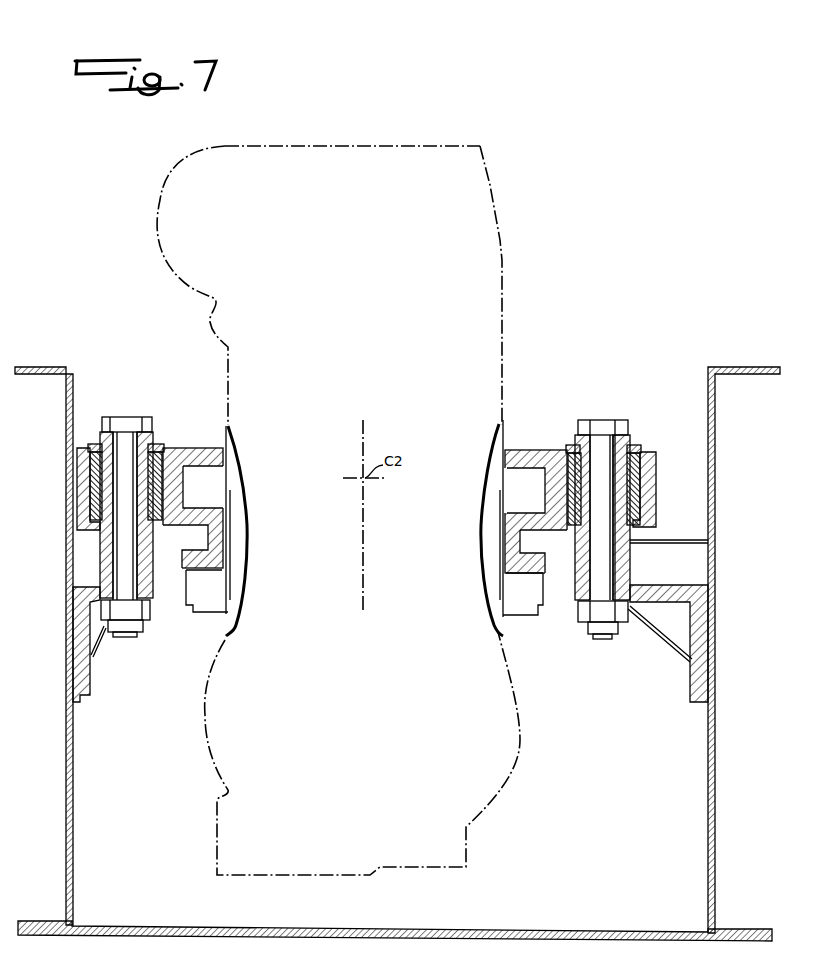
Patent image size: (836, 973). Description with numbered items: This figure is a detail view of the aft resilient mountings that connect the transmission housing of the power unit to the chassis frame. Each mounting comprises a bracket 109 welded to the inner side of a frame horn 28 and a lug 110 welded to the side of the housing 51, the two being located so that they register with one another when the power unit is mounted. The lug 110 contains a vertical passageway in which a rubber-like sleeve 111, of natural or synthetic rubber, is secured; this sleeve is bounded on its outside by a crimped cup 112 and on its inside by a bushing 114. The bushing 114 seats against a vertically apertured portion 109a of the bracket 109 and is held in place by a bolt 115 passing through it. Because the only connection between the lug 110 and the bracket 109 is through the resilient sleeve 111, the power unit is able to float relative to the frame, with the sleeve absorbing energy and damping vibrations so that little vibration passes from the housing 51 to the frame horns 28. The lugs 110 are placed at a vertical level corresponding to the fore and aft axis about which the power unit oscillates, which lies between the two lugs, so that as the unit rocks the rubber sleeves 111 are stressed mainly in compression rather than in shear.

The frame horns 28 is at (76, 392).
The housing 51 is at (229, 620).
The bracket 109 is at (89, 666).
The vertically apertured portion 109a is at (100, 551).
The lug 110 is at (163, 526).
The rubber-like sleeve 111 is at (78, 483).
The crimped cup 112 is at (159, 447).
The bushing 114 is at (160, 492).
The bolt 115 is at (130, 420).